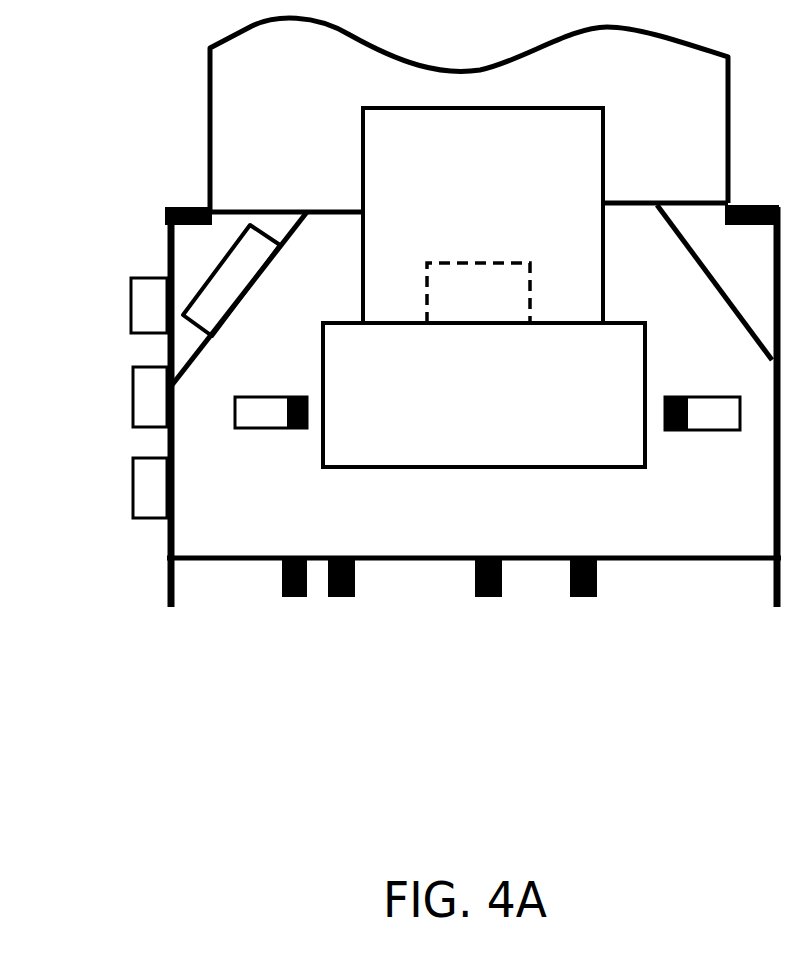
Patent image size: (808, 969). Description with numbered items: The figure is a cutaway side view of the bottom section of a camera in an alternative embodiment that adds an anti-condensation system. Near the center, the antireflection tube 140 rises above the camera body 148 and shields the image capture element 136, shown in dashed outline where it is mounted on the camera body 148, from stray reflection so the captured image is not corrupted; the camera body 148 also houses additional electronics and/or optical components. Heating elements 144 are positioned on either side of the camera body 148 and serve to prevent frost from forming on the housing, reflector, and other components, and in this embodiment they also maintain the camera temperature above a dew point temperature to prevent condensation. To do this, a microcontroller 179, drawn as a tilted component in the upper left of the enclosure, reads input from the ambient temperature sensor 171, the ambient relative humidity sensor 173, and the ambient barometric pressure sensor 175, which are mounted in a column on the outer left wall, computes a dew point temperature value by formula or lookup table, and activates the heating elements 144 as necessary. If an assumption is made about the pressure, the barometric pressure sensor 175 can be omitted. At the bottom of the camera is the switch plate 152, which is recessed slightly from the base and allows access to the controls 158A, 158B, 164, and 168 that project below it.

The image capture element 136 is at (475, 265).
The antireflection tube 140 is at (365, 153).
The heating elements 144 is at (270, 428).
The camera body 148 is at (457, 417).
The switch plate 152 is at (217, 560).
The control 158A is at (342, 597).
The control 158B is at (285, 594).
The control 164 is at (475, 587).
The control 168 is at (570, 594).
The ambient temperature sensor 171 is at (145, 297).
The ambient relative humidity sensor 173 is at (147, 397).
The ambient barometric pressure sensor 175 is at (150, 486).
The microcontroller 179 is at (235, 270).